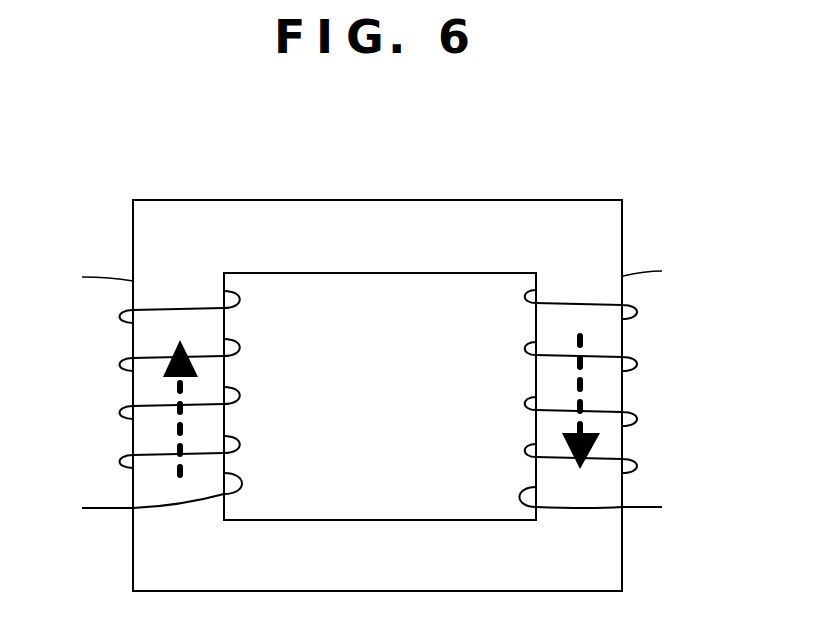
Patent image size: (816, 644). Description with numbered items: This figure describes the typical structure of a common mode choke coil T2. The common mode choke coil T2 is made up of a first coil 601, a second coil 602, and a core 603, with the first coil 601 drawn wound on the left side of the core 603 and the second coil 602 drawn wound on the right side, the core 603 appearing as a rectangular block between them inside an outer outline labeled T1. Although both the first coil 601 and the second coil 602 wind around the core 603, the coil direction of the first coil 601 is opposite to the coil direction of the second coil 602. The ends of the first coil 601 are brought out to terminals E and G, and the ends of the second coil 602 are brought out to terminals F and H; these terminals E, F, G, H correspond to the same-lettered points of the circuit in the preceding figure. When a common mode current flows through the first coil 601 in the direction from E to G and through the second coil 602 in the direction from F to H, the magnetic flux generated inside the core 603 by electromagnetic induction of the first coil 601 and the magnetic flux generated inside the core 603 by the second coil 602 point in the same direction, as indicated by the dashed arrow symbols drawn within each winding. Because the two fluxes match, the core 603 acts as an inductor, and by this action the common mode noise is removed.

The transformer T1 is at (488, 178).
The common mode choke coil T2 is at (380, 396).
The first coil 601 is at (120, 363).
The second coil 602 is at (638, 358).
The core 603 is at (607, 200).
The terminal G is at (94, 277).
The terminal H is at (654, 269).
The terminal E is at (96, 510).
The terminal F is at (652, 507).